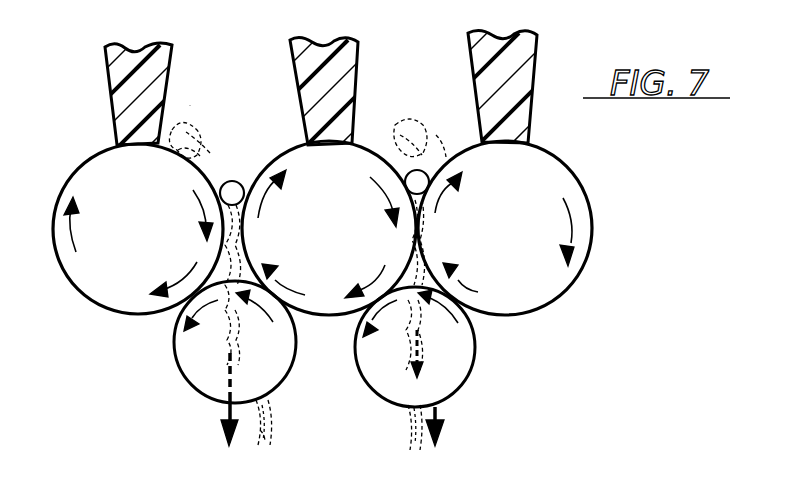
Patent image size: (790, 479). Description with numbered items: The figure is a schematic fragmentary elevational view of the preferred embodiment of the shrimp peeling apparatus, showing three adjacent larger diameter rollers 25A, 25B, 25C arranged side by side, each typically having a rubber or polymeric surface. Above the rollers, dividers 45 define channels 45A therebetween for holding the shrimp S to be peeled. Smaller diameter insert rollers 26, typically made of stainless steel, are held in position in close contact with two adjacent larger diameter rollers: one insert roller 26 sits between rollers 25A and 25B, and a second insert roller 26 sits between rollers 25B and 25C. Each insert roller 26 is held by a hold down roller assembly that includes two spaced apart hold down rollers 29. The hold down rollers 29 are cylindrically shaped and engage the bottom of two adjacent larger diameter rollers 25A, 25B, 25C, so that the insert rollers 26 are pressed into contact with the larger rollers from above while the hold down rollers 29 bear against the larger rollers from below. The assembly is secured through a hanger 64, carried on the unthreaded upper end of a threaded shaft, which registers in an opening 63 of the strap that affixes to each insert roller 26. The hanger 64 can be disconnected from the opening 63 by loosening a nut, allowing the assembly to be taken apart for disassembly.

The divider 45 is at (105, 90).
The channel 45A is at (193, 80).
The shrimp S is at (197, 160).
The smaller diameter insert roller 26 is at (235, 165).
The larger diameter roller 25A is at (175, 243).
The larger diameter roller 25B is at (372, 243).
The larger diameter roller 25C is at (550, 242).
The hold down roller 29 is at (176, 355).
The opening 63 is at (220, 425).
The hanger 64 is at (267, 415).